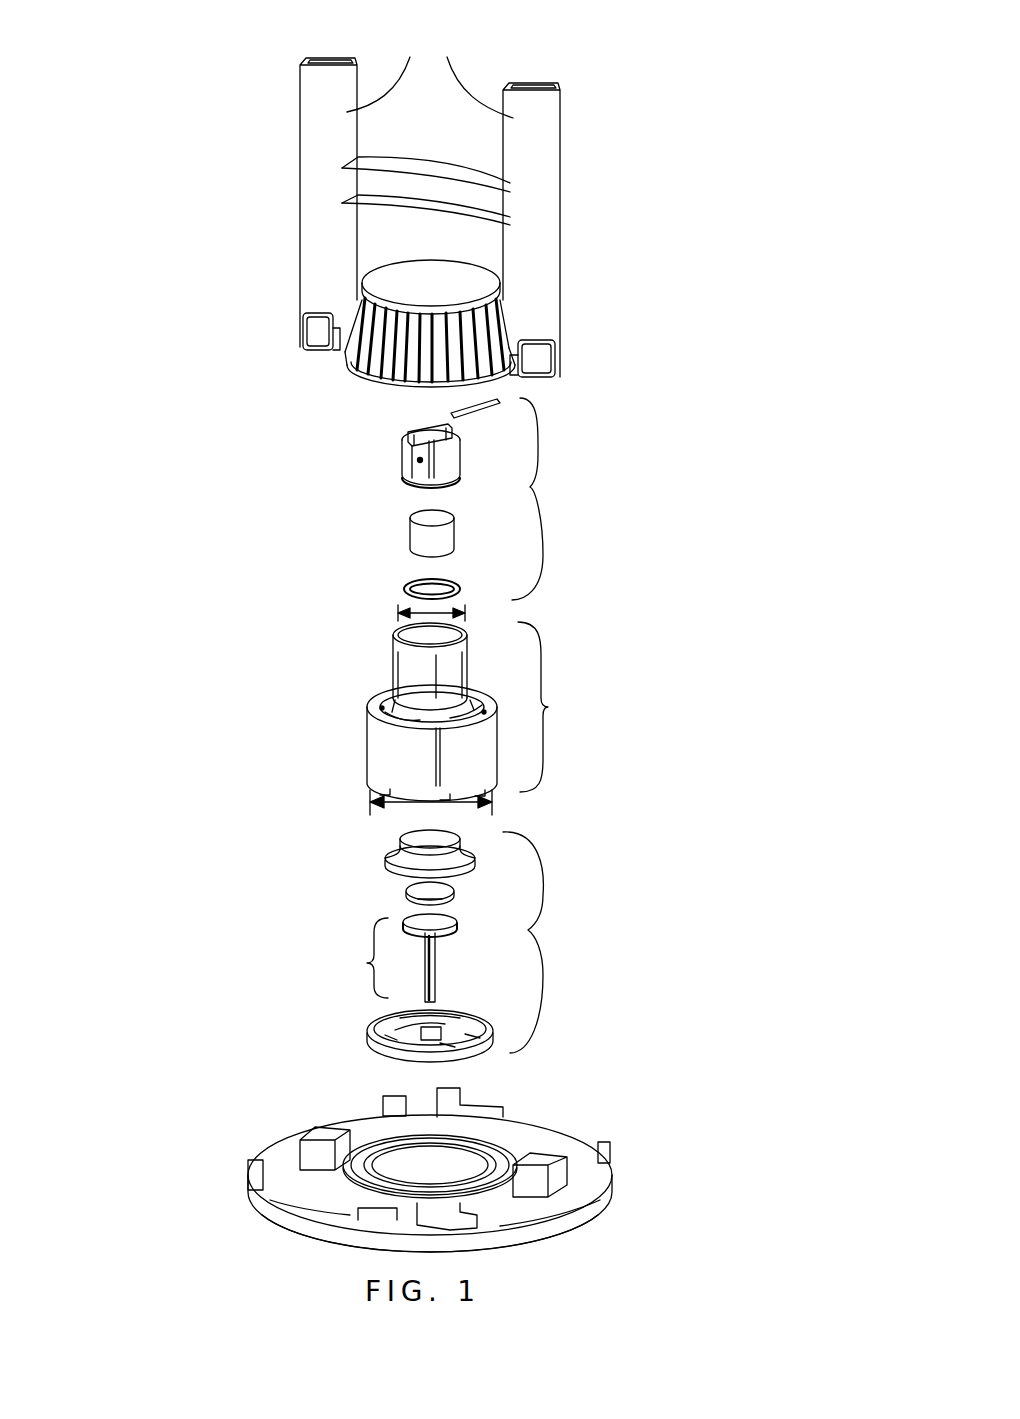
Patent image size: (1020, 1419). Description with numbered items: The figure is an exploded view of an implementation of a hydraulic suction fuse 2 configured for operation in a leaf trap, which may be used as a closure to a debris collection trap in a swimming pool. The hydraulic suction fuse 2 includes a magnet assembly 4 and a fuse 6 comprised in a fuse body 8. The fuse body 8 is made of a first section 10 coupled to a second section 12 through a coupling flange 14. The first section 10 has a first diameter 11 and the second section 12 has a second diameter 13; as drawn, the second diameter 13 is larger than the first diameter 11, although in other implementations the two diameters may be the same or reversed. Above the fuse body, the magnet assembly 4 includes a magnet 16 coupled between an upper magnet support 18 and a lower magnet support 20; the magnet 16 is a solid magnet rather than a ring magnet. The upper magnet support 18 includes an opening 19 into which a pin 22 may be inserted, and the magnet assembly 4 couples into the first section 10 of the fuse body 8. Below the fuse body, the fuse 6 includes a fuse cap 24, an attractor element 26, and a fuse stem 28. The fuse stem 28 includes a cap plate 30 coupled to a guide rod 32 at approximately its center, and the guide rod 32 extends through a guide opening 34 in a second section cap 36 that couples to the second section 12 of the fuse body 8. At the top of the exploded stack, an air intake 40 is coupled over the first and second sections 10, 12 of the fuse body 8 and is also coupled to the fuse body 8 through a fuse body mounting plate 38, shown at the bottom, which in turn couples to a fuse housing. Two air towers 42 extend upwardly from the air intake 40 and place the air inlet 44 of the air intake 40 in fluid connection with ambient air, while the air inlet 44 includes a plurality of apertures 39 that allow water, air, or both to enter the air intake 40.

The hydraulic suction fuse 2 is at (657, 430).
The magnet assembly 4 is at (539, 499).
The fuse 6 is at (537, 942).
The fuse body 8 is at (547, 707).
The first section 10 is at (408, 663).
The first diameter 11 is at (425, 612).
The second section 12 is at (380, 750).
The second diameter 13 is at (432, 808).
The coupling flange 14 is at (372, 700).
The magnet 16 is at (420, 538).
The upper magnet support 18 is at (405, 458).
The opening 19 is at (405, 475).
The lower magnet support 20 is at (405, 589).
The pin 22 is at (450, 412).
The fuse cap 24 is at (410, 850).
The attractor element 26 is at (405, 890).
The fuse stem 28 is at (367, 963).
The cap plate 30 is at (440, 918).
The guide rod 32 is at (440, 965).
The guide opening 34 is at (443, 1020).
The second section cap 36 is at (385, 1025).
The fuse body mounting plate 38 is at (280, 1150).
The apertures 39 is at (350, 360).
The air intake 40 is at (400, 275).
The air towers 42 is at (430, 193).
The air inlet 44 is at (423, 333).